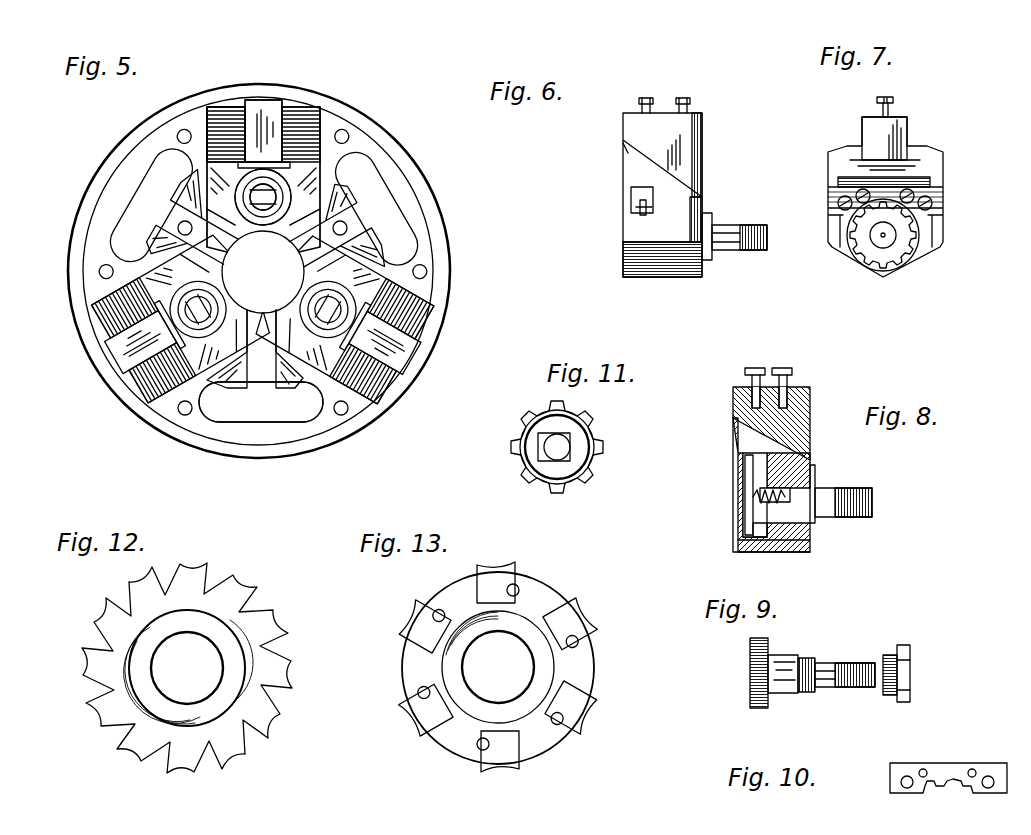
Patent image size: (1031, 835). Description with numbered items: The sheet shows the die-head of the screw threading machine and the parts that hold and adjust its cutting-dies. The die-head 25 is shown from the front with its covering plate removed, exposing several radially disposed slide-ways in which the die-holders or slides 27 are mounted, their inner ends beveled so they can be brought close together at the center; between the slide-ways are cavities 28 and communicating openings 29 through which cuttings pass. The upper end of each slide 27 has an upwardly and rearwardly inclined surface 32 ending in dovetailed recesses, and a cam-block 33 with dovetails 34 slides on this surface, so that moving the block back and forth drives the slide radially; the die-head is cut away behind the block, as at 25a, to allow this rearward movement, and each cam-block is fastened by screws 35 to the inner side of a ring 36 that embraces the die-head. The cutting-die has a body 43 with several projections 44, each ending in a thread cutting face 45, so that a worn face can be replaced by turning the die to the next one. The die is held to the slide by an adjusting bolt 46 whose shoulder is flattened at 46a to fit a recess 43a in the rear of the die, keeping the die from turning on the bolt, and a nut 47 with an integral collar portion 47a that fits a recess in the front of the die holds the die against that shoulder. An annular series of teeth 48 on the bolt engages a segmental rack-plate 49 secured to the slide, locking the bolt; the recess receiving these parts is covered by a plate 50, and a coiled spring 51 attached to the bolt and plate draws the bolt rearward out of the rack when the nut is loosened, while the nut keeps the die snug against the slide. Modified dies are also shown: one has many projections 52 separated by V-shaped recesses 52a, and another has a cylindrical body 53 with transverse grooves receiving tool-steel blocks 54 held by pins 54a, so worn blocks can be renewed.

In FIG. 5, the die-head 25 is at (287, 271).
In FIG. 5, the cut-away portion of die-head 25a is at (181, 102).
In FIG. 5, the die-holder or slide 27 is at (235, 236).
In FIG. 6, the die-holder or slide 27 is at (703, 203).
In FIG. 7, the die-holder or slide 27 is at (937, 177).
In FIG. 8, the die-holder or slide 27 is at (805, 538).
In FIG. 5, the cavity 28 is at (259, 351).
In FIG. 5, the communicating opening 29 is at (249, 336).
In FIG. 5, the inclined surface 32 is at (270, 279).
In FIG. 8, the inclined surface 32 is at (812, 457).
In FIG. 5, the cam-block 33 is at (255, 205).
In FIG. 6, the cam-block 33 is at (700, 143).
In FIG. 7, the cam-block 33 is at (907, 130).
In FIG. 8, the cam-block 33 is at (810, 420).
In FIG. 6, the dovetail 34 is at (626, 150).
In FIG. 7, the dovetail 34 is at (862, 148).
In FIG. 6, the screw 35 is at (647, 98).
In FIG. 7, the screw 35 is at (895, 100).
In FIG. 8, the screw 35 is at (757, 368).
In FIG. 5, the ring 36 is at (265, 271).
In FIG. 11, the die body 43 is at (590, 468).
In FIG. 11, the recess 43a is at (570, 463).
In FIG. 11, the projection 44 is at (590, 420).
In FIG. 11, the thread cutting face 45 is at (585, 412).
In FIG. 5, the adjusting bolt 46 is at (232, 246).
In FIG. 6, the adjusting bolt 46 is at (743, 250).
In FIG. 7, the adjusting bolt 46 is at (903, 263).
In FIG. 8, the adjusting bolt 46 is at (860, 517).
In FIG. 9, the adjusting bolt 46 is at (843, 687).
In FIG. 5, the flattened shoulder 46a is at (271, 242).
In FIG. 6, the flattened shoulder 46a is at (710, 253).
In FIG. 9, the flattened shoulder 46a is at (817, 660).
In FIG. 9, the nut 47 is at (910, 673).
In FIG. 9, the collar portion 47a is at (888, 697).
In FIG. 6, the teeth 48 is at (642, 215).
In FIG. 7, the teeth 48 is at (895, 252).
In FIG. 8, the teeth 48 is at (760, 533).
In FIG. 9, the teeth 48 is at (760, 707).
In FIG. 6, the segmental rack-plate 49 is at (631, 190).
In FIG. 7, the segmental rack-plate 49 is at (940, 203).
In FIG. 8, the segmental rack-plate 49 is at (762, 465).
In FIG. 10, the segmental rack-plate 49 is at (958, 765).
In FIG. 6, the plate 50 is at (630, 207).
In FIG. 8, the plate 50 is at (738, 450).
In FIG. 8, the coiled spring 51 is at (743, 497).
In FIG. 12, the projection 52 is at (250, 596).
In FIG. 12, the V-shaped recess 52a is at (278, 742).
In FIG. 13, the cylindrical body 53 is at (583, 667).
In FIG. 13, the block 54 is at (497, 667).
In FIG. 13, the pin 54a is at (526, 685).